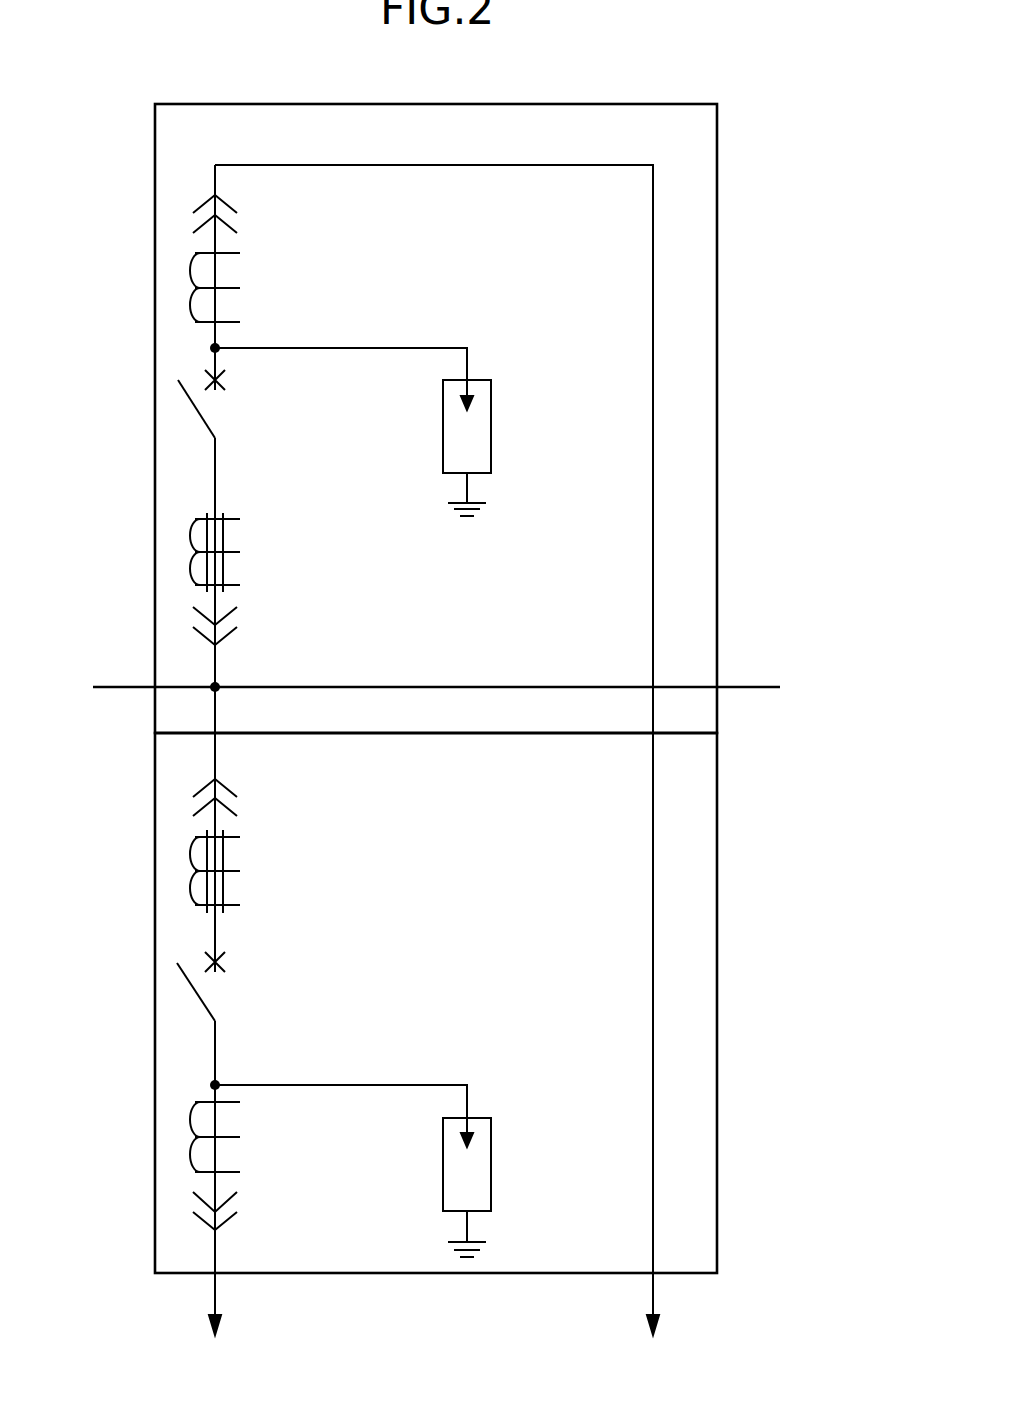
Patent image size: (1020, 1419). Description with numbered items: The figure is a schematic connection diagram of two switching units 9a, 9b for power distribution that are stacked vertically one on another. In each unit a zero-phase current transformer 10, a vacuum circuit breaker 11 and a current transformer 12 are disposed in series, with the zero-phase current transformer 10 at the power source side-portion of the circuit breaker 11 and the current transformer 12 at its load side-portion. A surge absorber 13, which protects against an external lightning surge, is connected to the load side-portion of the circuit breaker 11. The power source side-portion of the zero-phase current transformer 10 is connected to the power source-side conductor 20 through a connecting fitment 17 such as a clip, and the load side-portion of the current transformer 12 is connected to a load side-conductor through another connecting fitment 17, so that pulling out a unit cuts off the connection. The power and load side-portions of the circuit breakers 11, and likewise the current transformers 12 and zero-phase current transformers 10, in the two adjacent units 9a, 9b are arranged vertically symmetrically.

The switching unit for power distribution 9a is at (700, 229).
The switching unit for power distribution 9b is at (700, 797).
The zero-phase current transformer 10 is at (180, 554).
The vacuum circuit breaker 11 is at (187, 409).
The current transformer 12 is at (182, 286).
The surge absorber 13 is at (443, 452).
The connecting fitment 17 is at (243, 221).
The power source-side conductor 20 is at (433, 687).